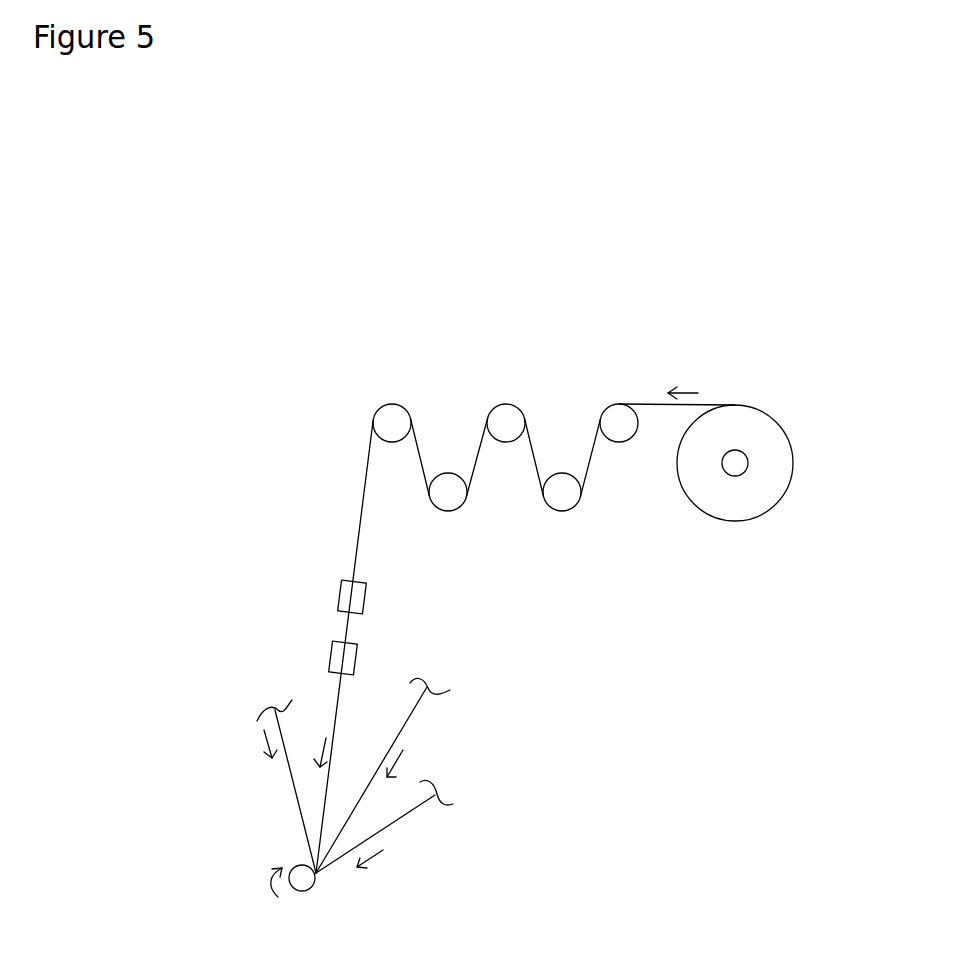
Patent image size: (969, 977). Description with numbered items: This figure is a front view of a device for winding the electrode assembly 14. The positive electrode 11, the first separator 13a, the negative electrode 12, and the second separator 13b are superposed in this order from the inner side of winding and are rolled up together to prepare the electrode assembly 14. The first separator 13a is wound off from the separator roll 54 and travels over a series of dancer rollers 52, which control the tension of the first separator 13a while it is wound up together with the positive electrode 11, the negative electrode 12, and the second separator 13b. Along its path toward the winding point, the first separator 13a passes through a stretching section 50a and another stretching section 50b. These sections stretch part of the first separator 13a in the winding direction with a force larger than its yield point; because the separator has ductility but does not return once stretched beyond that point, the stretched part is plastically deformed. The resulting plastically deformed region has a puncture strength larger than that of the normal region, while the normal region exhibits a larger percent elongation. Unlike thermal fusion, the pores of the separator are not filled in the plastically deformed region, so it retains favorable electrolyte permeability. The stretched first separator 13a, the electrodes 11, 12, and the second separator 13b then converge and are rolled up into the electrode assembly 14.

The positive electrode 11 is at (292, 778).
The negative electrode 12 is at (413, 720).
The first separator 13a is at (368, 462).
The second separator 13b is at (402, 822).
The electrode assembly 14 is at (308, 893).
The stretching section 50a is at (365, 597).
The another stretching section 50b is at (355, 658).
The dancer rollers 52 is at (392, 417).
The separator roll 54 is at (785, 447).